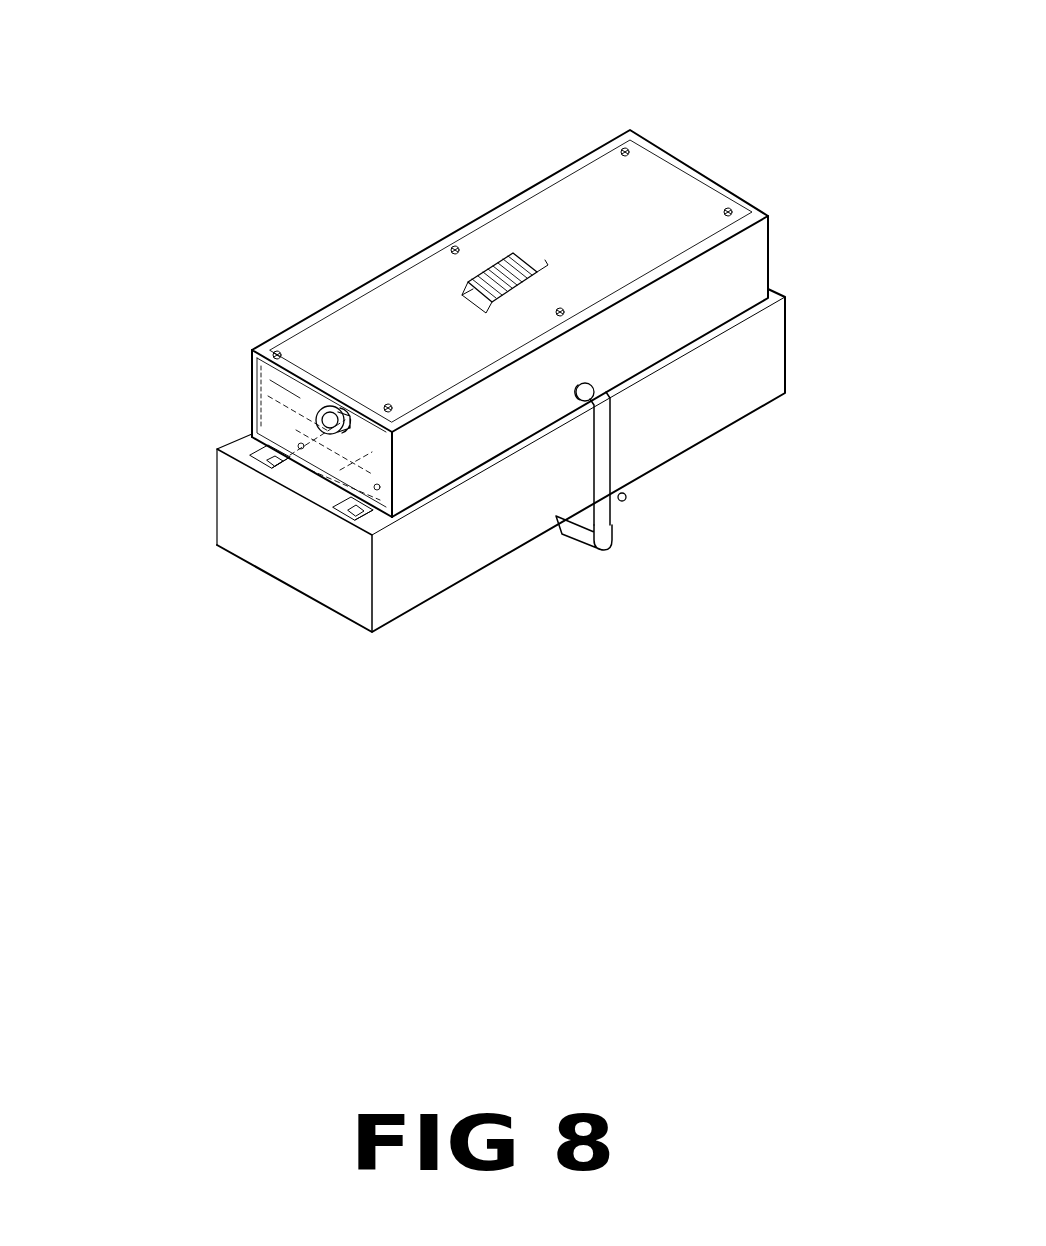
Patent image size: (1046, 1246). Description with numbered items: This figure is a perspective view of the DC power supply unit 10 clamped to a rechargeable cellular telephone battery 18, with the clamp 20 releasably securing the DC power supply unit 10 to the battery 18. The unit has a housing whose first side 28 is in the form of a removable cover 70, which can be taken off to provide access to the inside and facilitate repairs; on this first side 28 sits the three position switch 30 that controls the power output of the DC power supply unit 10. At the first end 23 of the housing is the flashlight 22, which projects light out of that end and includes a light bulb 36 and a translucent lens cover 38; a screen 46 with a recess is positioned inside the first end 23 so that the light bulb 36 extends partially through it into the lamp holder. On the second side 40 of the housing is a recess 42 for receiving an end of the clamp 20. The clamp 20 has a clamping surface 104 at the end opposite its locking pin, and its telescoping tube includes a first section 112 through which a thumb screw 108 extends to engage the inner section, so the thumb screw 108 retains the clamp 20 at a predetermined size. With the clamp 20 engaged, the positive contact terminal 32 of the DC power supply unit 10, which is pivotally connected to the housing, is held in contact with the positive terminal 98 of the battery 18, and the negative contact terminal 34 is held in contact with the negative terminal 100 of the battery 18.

The DC power supply unit 10 is at (245, 299).
The battery 18 is at (477, 570).
The clamp 20 is at (618, 463).
The flashlight 22 is at (230, 417).
The first end 23 is at (252, 356).
The first side 28 is at (672, 224).
The switch 30 is at (515, 272).
The positive contact terminal 32 is at (277, 461).
The negative contact terminal 34 is at (350, 509).
The light bulb 36 is at (318, 428).
The lens cover 38 is at (387, 447).
The second side 40 is at (765, 290).
The recess 42 is at (594, 384).
The screen 46 is at (345, 445).
The cover 70 is at (666, 177).
The positive terminal of the battery 98 is at (278, 472).
The negative terminal of the battery 100 is at (350, 517).
The clamping surface 104 is at (599, 550).
The thumb screw 108 is at (628, 497).
The first section 112 is at (612, 402).